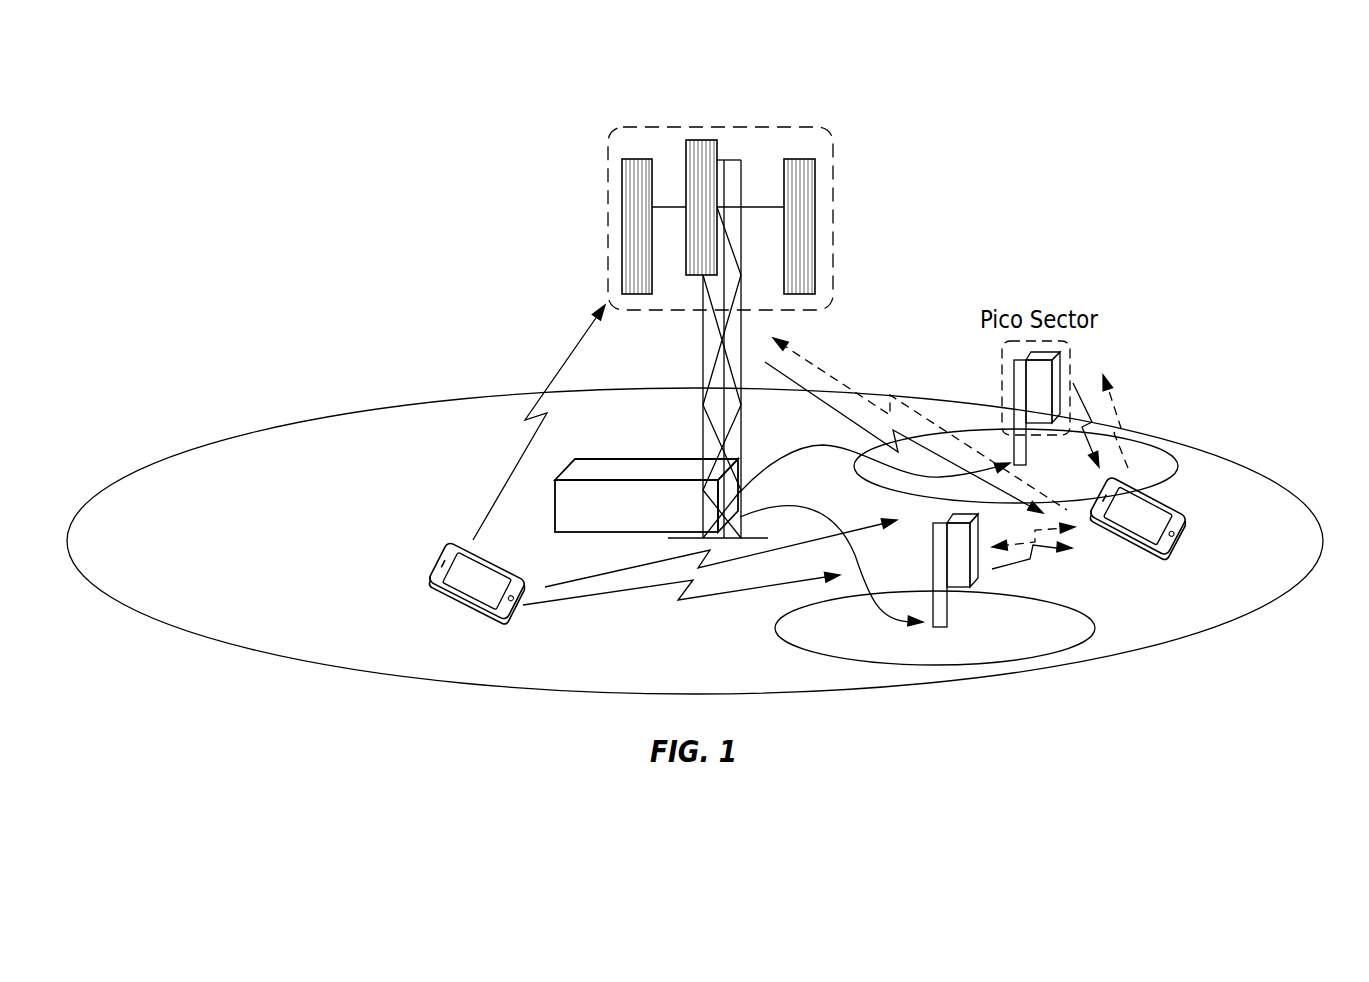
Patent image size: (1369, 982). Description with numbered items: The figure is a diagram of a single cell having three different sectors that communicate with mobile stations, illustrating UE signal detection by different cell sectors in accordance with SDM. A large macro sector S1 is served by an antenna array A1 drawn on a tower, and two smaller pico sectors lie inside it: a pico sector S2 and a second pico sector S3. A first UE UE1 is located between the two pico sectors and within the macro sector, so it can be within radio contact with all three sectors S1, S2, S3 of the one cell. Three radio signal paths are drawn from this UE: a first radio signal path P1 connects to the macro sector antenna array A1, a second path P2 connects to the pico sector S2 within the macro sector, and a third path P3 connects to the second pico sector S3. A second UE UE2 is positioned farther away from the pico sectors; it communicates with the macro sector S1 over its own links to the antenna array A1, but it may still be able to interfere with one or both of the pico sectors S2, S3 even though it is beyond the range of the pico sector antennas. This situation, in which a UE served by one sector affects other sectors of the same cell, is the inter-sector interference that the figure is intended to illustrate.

The antenna array A1 is at (815, 217).
The first radio signal path P1 is at (920, 413).
The second path P2 is at (1104, 401).
The third path P3 is at (1033, 564).
The macro sector S1 is at (1291, 490).
The pico sector S2 is at (1176, 468).
The second pico sector S3 is at (1092, 622).
The first UE UE1 is at (1183, 533).
The second UE UE2 is at (477, 607).